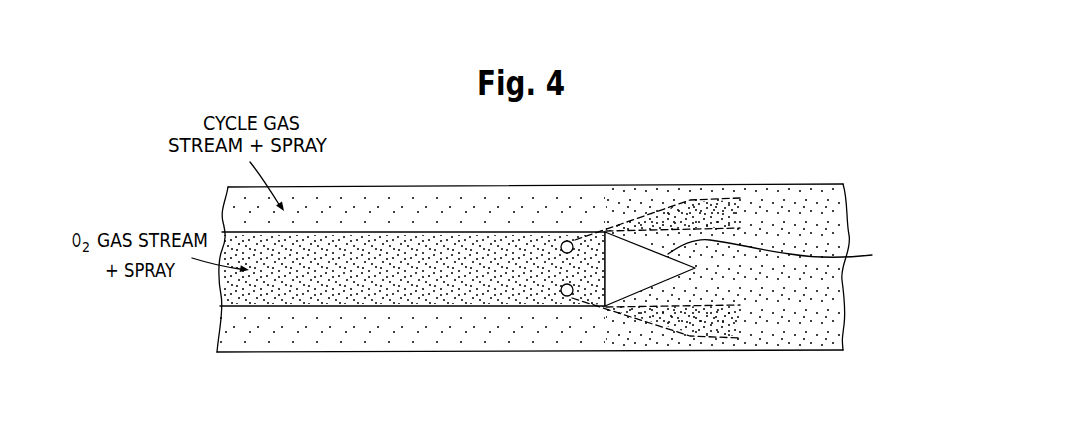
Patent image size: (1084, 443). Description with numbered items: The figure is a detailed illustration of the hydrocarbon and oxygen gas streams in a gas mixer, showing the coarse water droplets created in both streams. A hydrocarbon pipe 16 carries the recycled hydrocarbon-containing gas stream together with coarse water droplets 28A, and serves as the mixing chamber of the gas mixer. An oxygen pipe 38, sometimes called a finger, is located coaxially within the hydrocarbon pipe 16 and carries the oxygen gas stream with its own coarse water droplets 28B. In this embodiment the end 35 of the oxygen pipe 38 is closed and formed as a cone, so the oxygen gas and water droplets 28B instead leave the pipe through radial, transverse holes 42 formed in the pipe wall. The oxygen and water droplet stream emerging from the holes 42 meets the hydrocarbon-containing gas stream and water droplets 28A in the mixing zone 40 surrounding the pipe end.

The hydrocarbon pipe 16 is at (533, 251).
The coarse water droplets 28A is at (455, 208).
The coarse water droplets 28B is at (478, 288).
The oxygen pipe 38 is at (374, 307).
The mixing zone 40 is at (689, 208).
The radial holes 42 is at (563, 240).
The distal end 35 is at (781, 253).